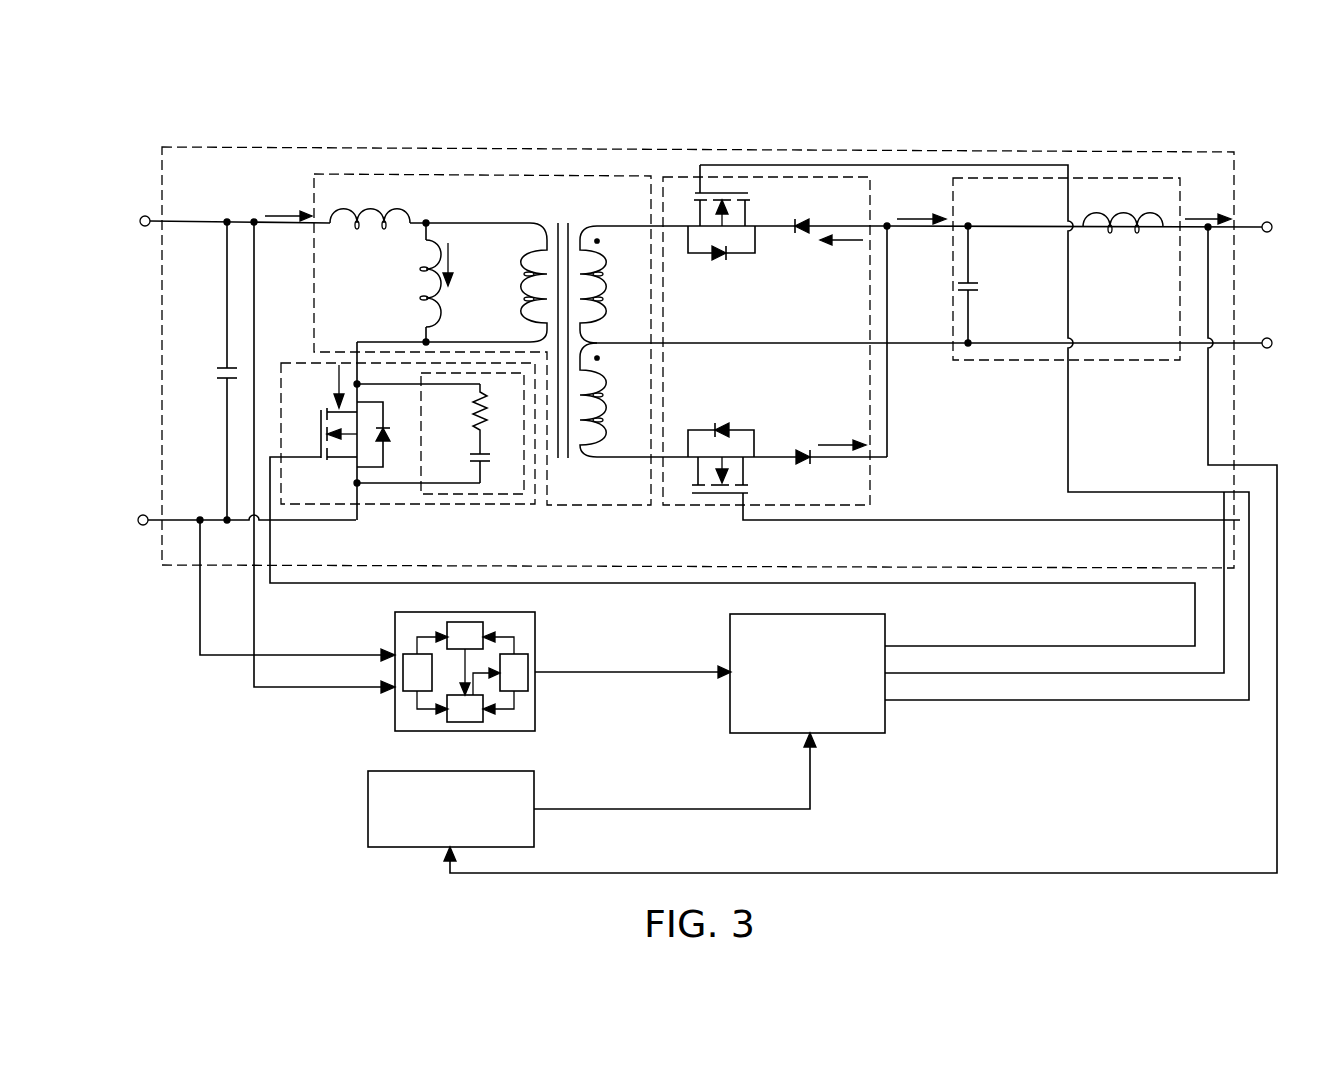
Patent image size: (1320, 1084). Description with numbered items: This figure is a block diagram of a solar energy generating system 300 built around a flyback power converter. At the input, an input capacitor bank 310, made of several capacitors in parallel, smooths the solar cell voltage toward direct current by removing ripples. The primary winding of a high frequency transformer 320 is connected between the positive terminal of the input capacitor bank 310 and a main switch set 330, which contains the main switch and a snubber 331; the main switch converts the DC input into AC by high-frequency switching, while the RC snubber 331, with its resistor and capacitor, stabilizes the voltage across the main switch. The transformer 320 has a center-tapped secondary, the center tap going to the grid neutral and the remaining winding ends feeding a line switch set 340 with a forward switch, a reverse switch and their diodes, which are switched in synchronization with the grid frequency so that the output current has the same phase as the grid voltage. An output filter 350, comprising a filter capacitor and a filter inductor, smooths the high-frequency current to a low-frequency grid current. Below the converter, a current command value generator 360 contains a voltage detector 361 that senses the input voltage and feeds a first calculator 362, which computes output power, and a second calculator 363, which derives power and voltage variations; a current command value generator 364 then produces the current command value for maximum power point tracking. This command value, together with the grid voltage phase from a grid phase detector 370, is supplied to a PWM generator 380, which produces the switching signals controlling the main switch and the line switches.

The power conversion system 300 is at (1252, 96).
The input capacitor bank 310 is at (222, 365).
The high frequency transformer 320 is at (343, 174).
The main switch set 330 is at (404, 504).
The snubber 331 is at (469, 494).
The line switch set 340 is at (681, 177).
The output filter 350 is at (1097, 178).
The current command value generator 360 is at (536, 629).
The voltage detector 361 is at (408, 652).
The first calculator 362 is at (467, 622).
The second calculator 363 is at (465, 723).
The current command value generator 364 is at (528, 686).
The grid phase detector 370 is at (535, 830).
The PWM generator 380 is at (886, 628).